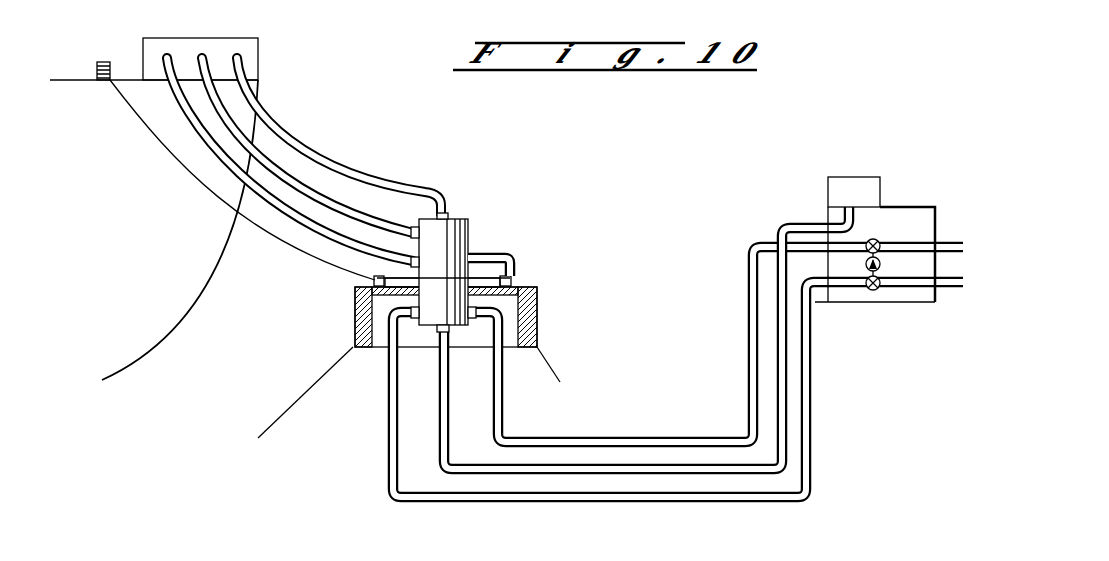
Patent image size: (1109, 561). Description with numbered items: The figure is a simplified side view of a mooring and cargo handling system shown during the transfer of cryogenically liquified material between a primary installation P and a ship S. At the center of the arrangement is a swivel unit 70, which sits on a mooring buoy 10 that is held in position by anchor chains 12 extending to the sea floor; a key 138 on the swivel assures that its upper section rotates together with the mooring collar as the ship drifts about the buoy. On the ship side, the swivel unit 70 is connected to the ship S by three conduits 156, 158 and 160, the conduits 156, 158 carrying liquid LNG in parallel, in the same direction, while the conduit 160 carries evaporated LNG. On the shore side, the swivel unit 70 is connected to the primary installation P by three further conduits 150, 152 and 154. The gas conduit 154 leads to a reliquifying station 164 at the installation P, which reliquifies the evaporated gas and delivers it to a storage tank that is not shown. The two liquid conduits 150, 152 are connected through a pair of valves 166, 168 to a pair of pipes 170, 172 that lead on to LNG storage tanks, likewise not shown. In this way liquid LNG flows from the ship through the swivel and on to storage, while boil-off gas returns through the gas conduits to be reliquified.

The ship S is at (259, 95).
The mooring buoy 10 is at (353, 323).
The anchor chains 12 is at (302, 397).
The swivel unit 70 is at (472, 233).
The key 138 is at (508, 252).
The conduit 150 is at (388, 418).
The conduit 152 is at (500, 418).
The conduit 154 is at (440, 446).
The conduit 156 is at (320, 235).
The conduit 158 is at (305, 188).
The conduit 160 is at (405, 187).
The reliquifying station 164 is at (855, 177).
The valve 166 is at (873, 290).
The valve 168 is at (876, 240).
The pipe 170 is at (953, 289).
The pipe 172 is at (953, 240).
The primary installation P is at (927, 206).